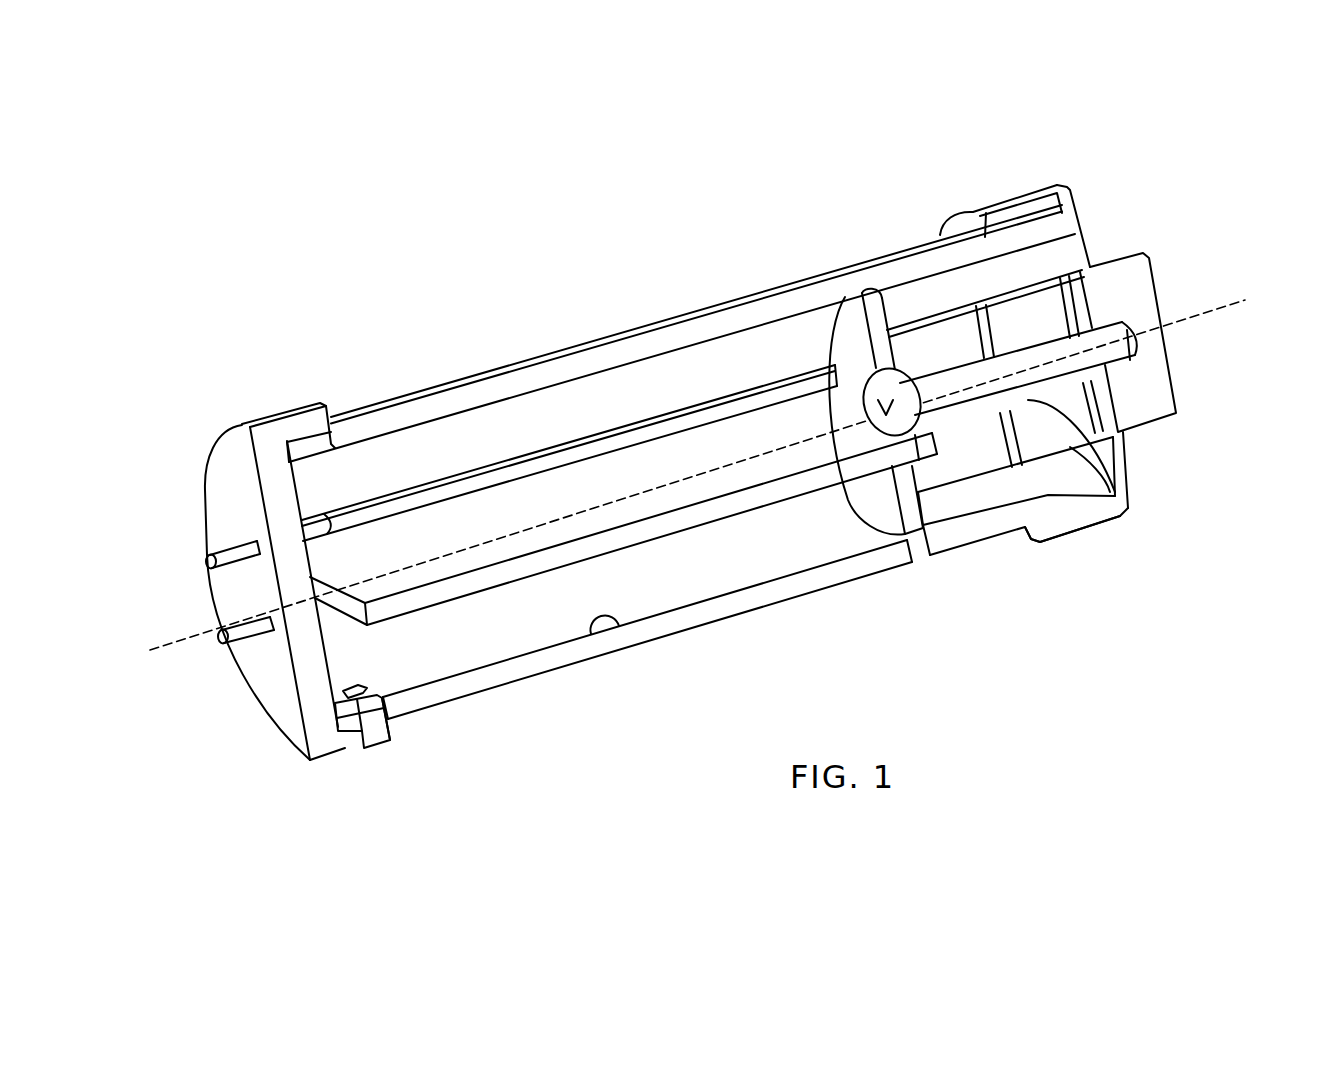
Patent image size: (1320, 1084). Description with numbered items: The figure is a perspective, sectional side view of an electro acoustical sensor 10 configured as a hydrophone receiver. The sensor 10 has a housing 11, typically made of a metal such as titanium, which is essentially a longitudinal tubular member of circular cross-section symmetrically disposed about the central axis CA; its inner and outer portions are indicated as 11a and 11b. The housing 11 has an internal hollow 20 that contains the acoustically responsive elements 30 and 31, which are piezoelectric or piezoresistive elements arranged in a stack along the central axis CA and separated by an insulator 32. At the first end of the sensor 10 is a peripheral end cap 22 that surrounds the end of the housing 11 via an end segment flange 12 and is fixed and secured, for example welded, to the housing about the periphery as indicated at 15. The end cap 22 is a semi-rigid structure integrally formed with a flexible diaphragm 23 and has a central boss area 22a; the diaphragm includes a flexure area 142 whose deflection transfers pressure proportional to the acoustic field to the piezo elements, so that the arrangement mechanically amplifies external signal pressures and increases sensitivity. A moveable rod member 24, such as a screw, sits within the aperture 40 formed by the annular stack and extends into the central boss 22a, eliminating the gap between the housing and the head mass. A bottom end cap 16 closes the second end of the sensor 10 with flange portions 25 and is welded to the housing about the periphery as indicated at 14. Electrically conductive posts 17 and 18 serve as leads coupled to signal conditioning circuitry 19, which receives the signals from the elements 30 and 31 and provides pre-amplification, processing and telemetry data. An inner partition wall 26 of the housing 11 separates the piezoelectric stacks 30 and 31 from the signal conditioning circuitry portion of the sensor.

The electro acoustical sensor 10 is at (486, 291).
The housing 11 is at (748, 607).
The inner portion of the housing 11a is at (590, 632).
The outer portion of the housing 11b is at (782, 290).
The end segment flange 12 is at (1088, 528).
The weld securing bottom end cap 14 is at (393, 725).
The weld securing end cap 15 is at (1022, 537).
The bottom end cap 16 is at (323, 760).
The post 17 is at (238, 562).
The post 18 is at (257, 642).
The signal conditioning circuitry 19 is at (490, 505).
The internal hollow 20 is at (632, 385).
The peripheral end cap 22 is at (1160, 388).
The central boss area 22a is at (1137, 338).
The diaphragm 23 is at (1132, 488).
The moveable rod member 24 is at (1100, 345).
The flange portions 25 is at (300, 422).
The inner partition wall 26 is at (892, 503).
The acoustically responsive element 30 is at (1040, 310).
The acoustically responsive element 31 is at (932, 343).
The insulator 32 is at (990, 307).
The aperture 40 is at (1073, 447).
The flexure area 142 is at (1128, 507).
The central axis CA is at (718, 468).